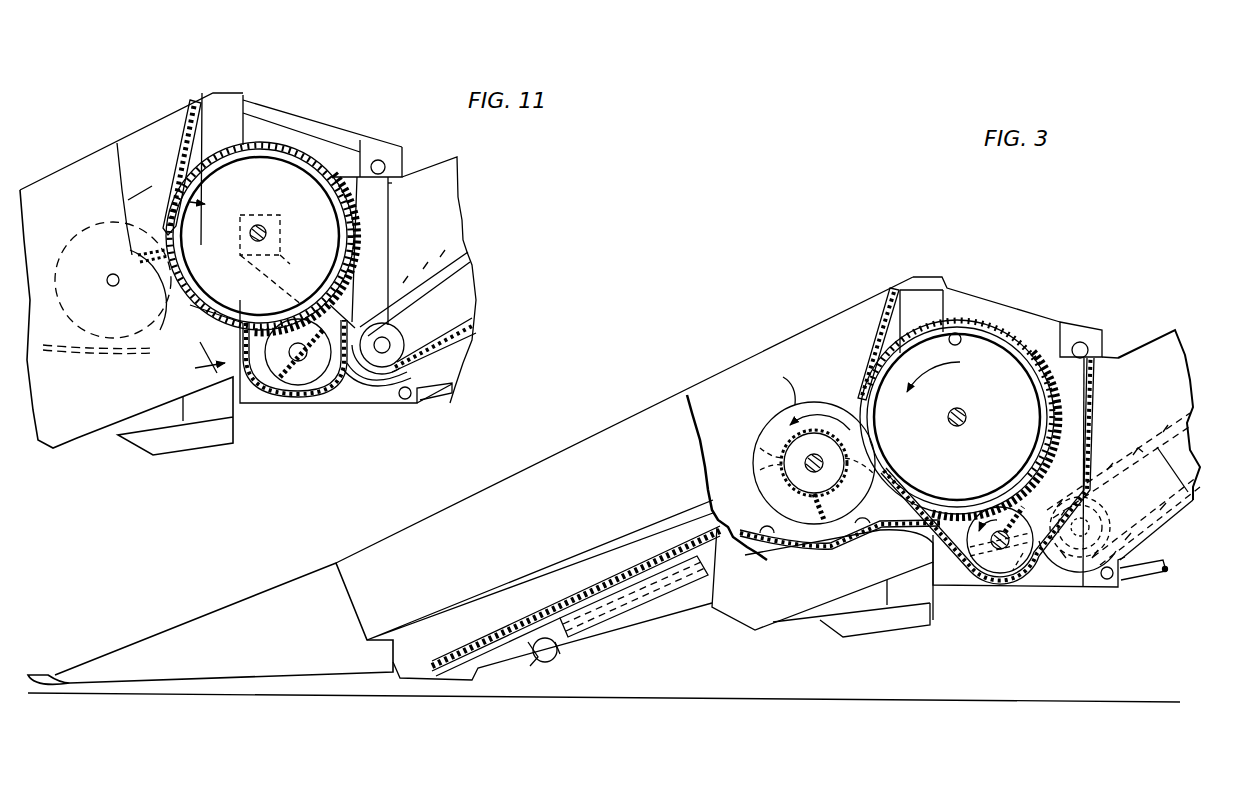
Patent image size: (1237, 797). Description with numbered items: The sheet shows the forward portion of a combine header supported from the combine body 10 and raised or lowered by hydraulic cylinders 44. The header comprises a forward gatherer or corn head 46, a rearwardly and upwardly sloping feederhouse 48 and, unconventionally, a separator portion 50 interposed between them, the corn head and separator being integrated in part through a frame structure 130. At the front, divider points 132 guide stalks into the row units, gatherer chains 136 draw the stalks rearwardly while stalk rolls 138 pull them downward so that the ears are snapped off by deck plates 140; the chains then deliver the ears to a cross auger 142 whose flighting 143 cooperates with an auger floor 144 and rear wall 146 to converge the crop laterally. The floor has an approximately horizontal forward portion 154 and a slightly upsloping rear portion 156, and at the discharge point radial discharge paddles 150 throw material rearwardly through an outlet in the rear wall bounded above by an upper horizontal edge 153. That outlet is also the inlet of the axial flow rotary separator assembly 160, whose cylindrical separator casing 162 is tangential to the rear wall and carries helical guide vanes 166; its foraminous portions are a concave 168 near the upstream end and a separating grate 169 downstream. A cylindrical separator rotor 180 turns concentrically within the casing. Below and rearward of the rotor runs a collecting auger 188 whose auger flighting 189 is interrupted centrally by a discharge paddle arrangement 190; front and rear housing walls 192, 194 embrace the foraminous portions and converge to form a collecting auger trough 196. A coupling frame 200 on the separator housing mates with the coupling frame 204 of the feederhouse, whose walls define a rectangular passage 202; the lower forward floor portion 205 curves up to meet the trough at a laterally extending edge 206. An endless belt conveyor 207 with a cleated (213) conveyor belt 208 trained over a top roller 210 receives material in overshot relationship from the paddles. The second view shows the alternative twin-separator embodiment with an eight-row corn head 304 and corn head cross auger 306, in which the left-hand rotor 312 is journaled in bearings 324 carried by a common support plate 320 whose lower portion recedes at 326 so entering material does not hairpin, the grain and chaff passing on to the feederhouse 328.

In FIG. 11, the combine body 10 is at (175, 285).
In FIG. 3, the hydraulic cylinders 44 is at (1160, 566).
In FIG. 3, the gatherer portion (corn head) 46 is at (745, 345).
In FIG. 3, the feederhouse 48 is at (1190, 325).
In FIG. 3, the separator portion 50 is at (1000, 260).
In FIG. 3, the frame structure 130 is at (938, 600).
In FIG. 3, the divider points 132 is at (195, 612).
In FIG. 3, the gatherer chains 136 is at (465, 644).
In FIG. 3, the stalk rolls 138 is at (605, 633).
In FIG. 3, the deck plates 140 is at (518, 624).
In FIG. 3, the cross auger 142 is at (760, 416).
In FIG. 3, the flighting 143 is at (772, 385).
In FIG. 3, the auger floor 144 is at (752, 513).
In FIG. 3, the rear wall 146 is at (845, 400).
In FIG. 3, the discharge paddles 150 is at (770, 458).
In FIG. 3, the upper horizontal edge 153 is at (872, 420).
In FIG. 3, the forward portion of auger floor 154 is at (763, 540).
In FIG. 3, the rear portion of auger floor 156 is at (863, 526).
In FIG. 3, the axial flow rotary separator assembly 160 is at (985, 330).
In FIG. 3, the separator casing 162 is at (1008, 340).
In FIG. 3, the guide vanes 166 is at (955, 333).
In FIG. 3, the concave 168 is at (1040, 426).
In FIG. 3, the separating grate 169 is at (1033, 388).
In FIG. 3, the separator rotor 180 is at (957, 417).
In FIG. 3, the collecting auger 188 is at (1030, 452).
In FIG. 3, the auger flighting 189 is at (1025, 500).
In FIG. 3, the discharge paddle arrangement 190 is at (1012, 585).
In FIG. 3, the front separator housing wall 192 is at (912, 500).
In FIG. 3, the rear separator housing wall 194 is at (1092, 392).
In FIG. 3, the collecting auger trough 196 is at (983, 580).
In FIG. 3, the coupling frame 200 is at (1082, 325).
In FIG. 3, the passage 202 is at (1161, 351).
In FIG. 3, the coupling frame 204 is at (1108, 350).
In FIG. 3, the lower forward portion of feederhouse floor 205 is at (1160, 505).
In FIG. 3, the laterally extending edge 206 is at (1058, 565).
In FIG. 3, the endless belt conveyor 207 is at (1167, 420).
In FIG. 3, the conveyor belt 208 is at (1180, 485).
In FIG. 3, the top roller 210 is at (1140, 480).
In FIG. 3, the ribs or cleats 213 is at (1133, 453).
In FIG. 11, the eight-row corn head 304 is at (62, 165).
In FIG. 11, the corn head cross auger 306 is at (64, 244).
In FIG. 11, the left-hand rotor 312 is at (185, 200).
In FIG. 11, the common support plate 320 is at (238, 170).
In FIG. 11, the bearings 324 is at (250, 215).
In FIG. 11, the receding lower portion of support plate 326 is at (270, 284).
In FIG. 11, the feederhouse 328 is at (432, 150).